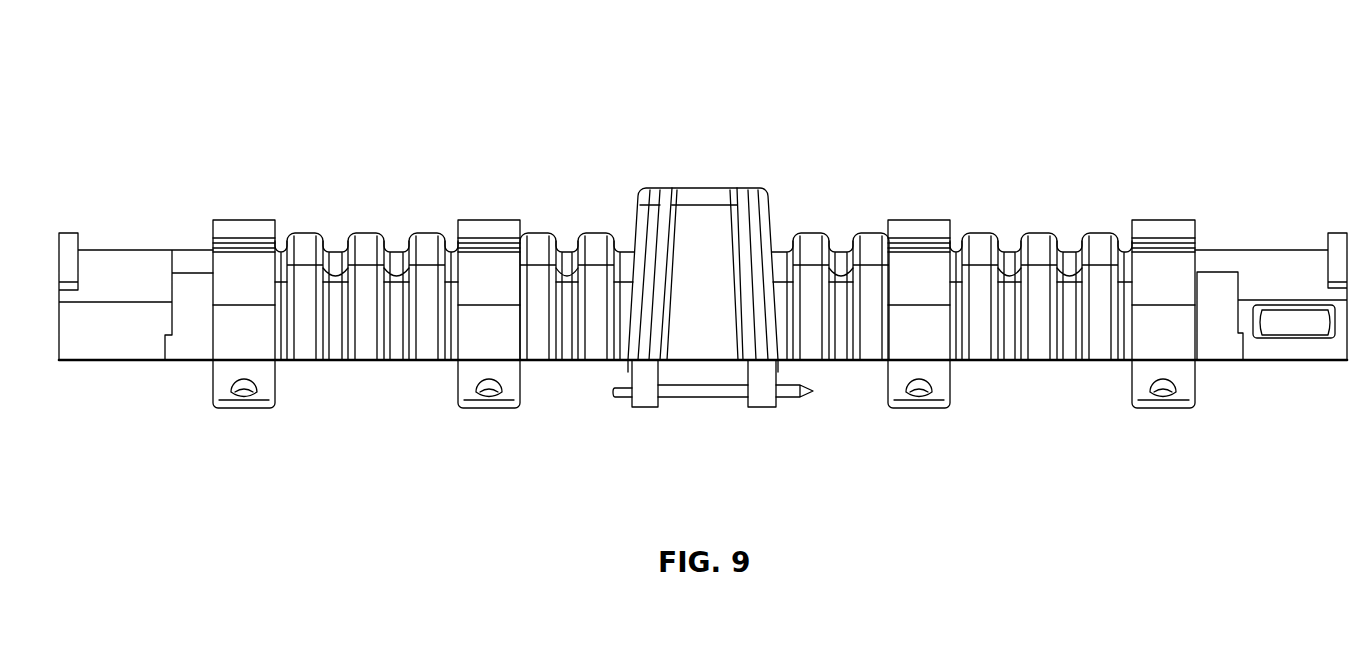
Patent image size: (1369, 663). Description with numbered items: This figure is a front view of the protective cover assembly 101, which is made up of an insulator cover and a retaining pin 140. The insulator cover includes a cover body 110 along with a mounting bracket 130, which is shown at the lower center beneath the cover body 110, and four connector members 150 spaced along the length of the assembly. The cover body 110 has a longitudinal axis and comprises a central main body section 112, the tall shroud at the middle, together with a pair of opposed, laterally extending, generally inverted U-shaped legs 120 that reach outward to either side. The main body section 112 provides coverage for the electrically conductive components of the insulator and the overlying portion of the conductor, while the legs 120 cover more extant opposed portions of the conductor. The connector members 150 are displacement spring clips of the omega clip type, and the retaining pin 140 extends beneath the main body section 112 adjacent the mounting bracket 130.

The protective cover assembly 101 is at (985, 62).
The cover body 110 is at (712, 182).
The main body section 112 is at (660, 193).
The legs 120 is at (342, 247).
The mounting bracket 130 is at (642, 394).
The retaining pin 140 is at (716, 393).
The connector members 150 is at (940, 383).